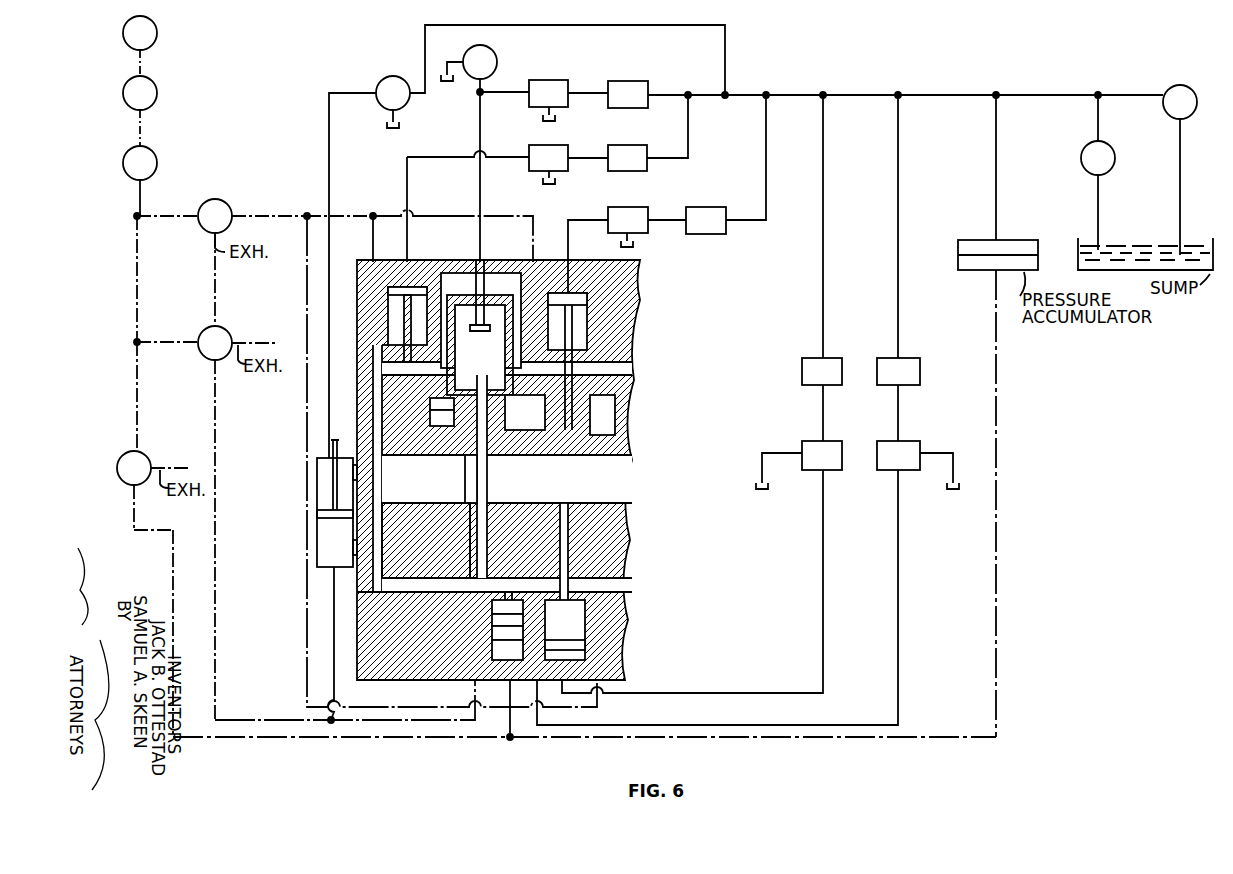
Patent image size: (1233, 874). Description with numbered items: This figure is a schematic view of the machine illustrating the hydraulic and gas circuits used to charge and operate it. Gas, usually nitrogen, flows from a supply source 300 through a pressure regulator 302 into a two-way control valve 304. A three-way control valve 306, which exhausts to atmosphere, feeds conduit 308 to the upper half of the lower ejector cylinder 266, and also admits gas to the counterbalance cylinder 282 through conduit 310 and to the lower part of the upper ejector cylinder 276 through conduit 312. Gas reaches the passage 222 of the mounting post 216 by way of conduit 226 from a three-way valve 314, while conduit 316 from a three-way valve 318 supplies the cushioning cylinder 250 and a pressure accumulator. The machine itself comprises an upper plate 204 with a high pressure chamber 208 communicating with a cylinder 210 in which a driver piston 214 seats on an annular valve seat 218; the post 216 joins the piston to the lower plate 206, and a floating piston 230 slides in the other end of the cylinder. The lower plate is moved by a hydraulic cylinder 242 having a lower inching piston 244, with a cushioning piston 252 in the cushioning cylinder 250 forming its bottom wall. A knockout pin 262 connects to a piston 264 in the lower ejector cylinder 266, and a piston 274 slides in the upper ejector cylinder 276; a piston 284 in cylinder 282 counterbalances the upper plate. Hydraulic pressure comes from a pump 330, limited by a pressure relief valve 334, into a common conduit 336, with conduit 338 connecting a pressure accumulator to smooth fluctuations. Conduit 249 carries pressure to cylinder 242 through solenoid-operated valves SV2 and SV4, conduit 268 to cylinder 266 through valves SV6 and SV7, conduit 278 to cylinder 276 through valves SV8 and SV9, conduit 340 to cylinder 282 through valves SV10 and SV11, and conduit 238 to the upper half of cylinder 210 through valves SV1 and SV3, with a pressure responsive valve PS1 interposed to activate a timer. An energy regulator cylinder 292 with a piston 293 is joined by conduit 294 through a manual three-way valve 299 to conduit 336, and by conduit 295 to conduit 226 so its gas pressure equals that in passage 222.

The supply source 300 is at (157, 33).
The pressure regulator 302 is at (123, 93).
The two-way control valve 304 is at (123, 163).
The three-way control valve 306 is at (201, 226).
The three-way valve 314 is at (202, 332).
The three-way valve 318 is at (118, 464).
The conduit 316 is at (388, 740).
The conduit 294 is at (329, 125).
The conduit 295 is at (334, 652).
The three-way manually operated valve 299 is at (386, 76).
The pressure responsive valve PS1 is at (496, 52).
The conduit 238 is at (484, 200).
The solenoid-operated valve SV1 is at (540, 80).
The solenoid-operated valve SV3 is at (628, 81).
The solenoid-operated valve SV11 is at (540, 145).
The solenoid-operated valve SV10 is at (618, 145).
The solenoid-operated valve SV9 is at (618, 207).
The solenoid-operated valve SV8 is at (696, 207).
The solenoid-operated valve SV6 is at (825, 358).
The solenoid-operated valve SV7 is at (825, 441).
The solenoid-operated valve SV4 is at (900, 358).
The solenoid-operated valve SV2 is at (900, 441).
The conduit 340 is at (406, 190).
The conduit 278 is at (567, 218).
The conduit 310 is at (373, 236).
The conduit 312 is at (452, 214).
The common conduit 336 is at (1086, 95).
The conduit 338 is at (996, 176).
The pressure relief valve 334 is at (1083, 166).
The hydraulic pump 330 is at (1188, 88).
The conduit 268 is at (700, 686).
The conduit 249 is at (670, 720).
The conduit 308 is at (307, 625).
The conduit 226 is at (266, 718).
The cylinder 292 is at (318, 540).
The piston 293 is at (318, 513).
The upper plate 204 is at (606, 440).
The lower plate 206 is at (615, 527).
The high pressure chamber 208 is at (605, 408).
The cylinder 210 is at (482, 378).
The driver piston 214 is at (430, 404).
The mounting post 216 is at (489, 482).
The annular valve seat 218 is at (430, 420).
The passage 222 is at (468, 474).
The floating piston 230 is at (470, 345).
The lower inching piston 244 is at (492, 612).
The hydraulic cylinder 242 is at (492, 622).
The cushioning piston 252 is at (492, 634).
The cushioning cylinder 250 is at (492, 652).
The knockout pin 262 is at (568, 560).
The piston 264 is at (578, 642).
The lower ejector cylinder 266 is at (575, 614).
The piston 274 is at (580, 300).
The cylinder 276 is at (580, 338).
The cylinder 282 is at (392, 338).
The piston 284 is at (410, 268).